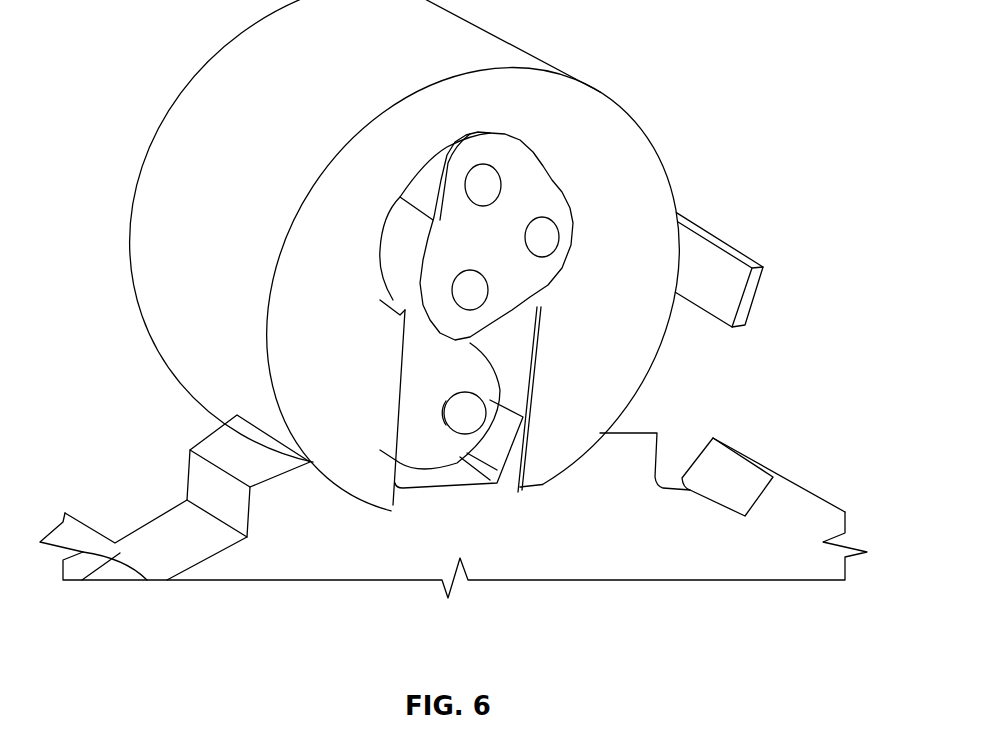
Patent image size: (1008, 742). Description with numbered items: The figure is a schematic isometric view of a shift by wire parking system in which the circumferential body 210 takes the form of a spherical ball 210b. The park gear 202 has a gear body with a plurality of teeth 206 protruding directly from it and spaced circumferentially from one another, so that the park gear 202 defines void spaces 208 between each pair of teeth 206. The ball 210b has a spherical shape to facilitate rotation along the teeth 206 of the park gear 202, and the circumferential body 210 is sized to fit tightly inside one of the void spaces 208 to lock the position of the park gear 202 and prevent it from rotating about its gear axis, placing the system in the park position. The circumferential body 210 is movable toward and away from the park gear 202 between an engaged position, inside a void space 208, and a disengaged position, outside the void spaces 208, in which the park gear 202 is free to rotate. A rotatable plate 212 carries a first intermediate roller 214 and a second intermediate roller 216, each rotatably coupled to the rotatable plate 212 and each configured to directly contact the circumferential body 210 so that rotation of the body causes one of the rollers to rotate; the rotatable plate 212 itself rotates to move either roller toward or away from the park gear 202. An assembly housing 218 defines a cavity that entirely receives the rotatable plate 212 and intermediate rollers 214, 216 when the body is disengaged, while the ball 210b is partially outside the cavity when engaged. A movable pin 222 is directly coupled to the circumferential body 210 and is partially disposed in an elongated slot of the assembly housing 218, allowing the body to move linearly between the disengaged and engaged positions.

The park gear 202 is at (838, 525).
The teeth 206 is at (440, 474).
The void spaces 208 is at (688, 488).
The circumferential body 210 is at (490, 400).
The ball 210b is at (410, 387).
The rotatable plate 212 is at (550, 174).
The first intermediate roller 214 is at (423, 167).
The second intermediate roller 216 is at (393, 230).
The assembly housing 218 is at (598, 93).
The movable pin 222 is at (458, 413).